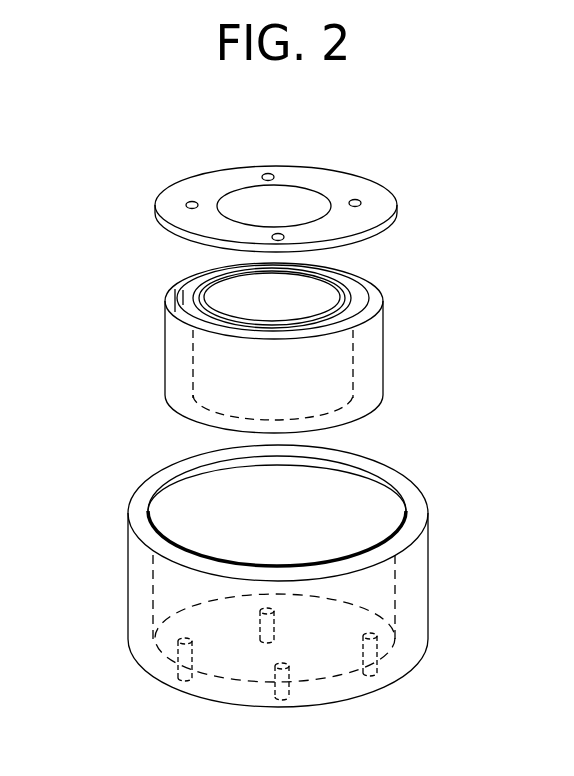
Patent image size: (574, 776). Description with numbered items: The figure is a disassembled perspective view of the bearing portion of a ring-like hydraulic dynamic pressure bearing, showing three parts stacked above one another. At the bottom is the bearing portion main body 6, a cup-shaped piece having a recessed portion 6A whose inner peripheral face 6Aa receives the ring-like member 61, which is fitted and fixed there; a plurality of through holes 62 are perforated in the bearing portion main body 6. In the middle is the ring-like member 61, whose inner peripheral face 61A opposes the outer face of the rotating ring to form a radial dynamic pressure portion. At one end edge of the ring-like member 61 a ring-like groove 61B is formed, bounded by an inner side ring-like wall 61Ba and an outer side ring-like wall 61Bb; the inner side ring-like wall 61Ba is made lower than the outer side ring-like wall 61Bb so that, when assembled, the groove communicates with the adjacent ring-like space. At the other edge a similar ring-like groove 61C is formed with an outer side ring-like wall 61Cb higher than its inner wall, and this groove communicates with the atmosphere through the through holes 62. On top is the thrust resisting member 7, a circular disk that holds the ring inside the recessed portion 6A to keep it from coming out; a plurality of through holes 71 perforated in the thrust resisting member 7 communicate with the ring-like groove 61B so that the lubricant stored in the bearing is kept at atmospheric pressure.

The thrust resisting member 7 is at (388, 183).
The through holes 71 is at (262, 176).
The ring-like member 61 is at (376, 341).
The inner peripheral face 61A is at (330, 305).
The ring-like groove 61B is at (177, 288).
The inner side ring-like wall 61Ba is at (205, 272).
The outer side ring-like wall 61Bb is at (169, 308).
The ring-like groove 61C is at (338, 417).
The outer side ring-like wall 61Cb is at (380, 398).
The bearing portion main body 6 is at (426, 588).
The recessed portion 6A is at (197, 532).
The inner peripheral face 6Aa is at (367, 505).
The through holes 62 is at (263, 633).